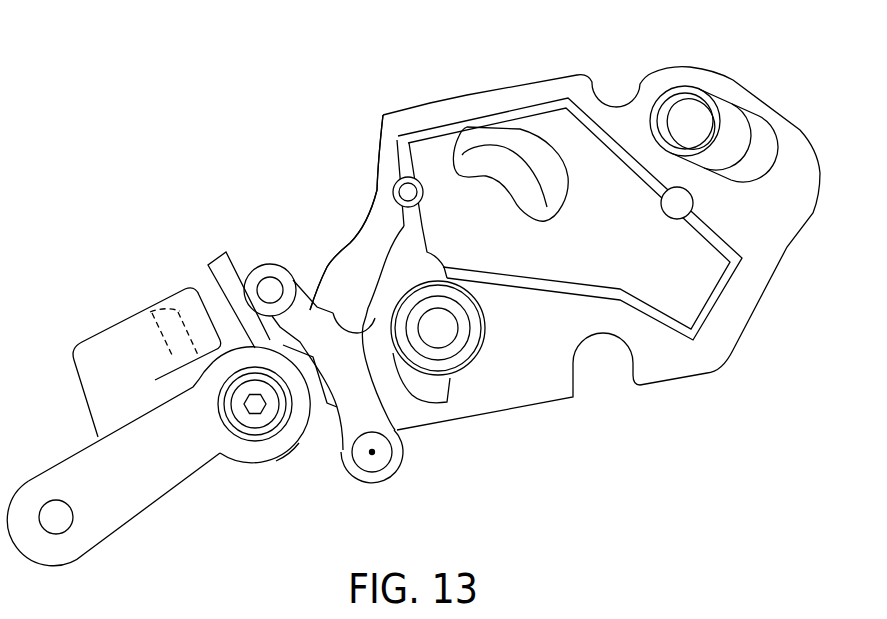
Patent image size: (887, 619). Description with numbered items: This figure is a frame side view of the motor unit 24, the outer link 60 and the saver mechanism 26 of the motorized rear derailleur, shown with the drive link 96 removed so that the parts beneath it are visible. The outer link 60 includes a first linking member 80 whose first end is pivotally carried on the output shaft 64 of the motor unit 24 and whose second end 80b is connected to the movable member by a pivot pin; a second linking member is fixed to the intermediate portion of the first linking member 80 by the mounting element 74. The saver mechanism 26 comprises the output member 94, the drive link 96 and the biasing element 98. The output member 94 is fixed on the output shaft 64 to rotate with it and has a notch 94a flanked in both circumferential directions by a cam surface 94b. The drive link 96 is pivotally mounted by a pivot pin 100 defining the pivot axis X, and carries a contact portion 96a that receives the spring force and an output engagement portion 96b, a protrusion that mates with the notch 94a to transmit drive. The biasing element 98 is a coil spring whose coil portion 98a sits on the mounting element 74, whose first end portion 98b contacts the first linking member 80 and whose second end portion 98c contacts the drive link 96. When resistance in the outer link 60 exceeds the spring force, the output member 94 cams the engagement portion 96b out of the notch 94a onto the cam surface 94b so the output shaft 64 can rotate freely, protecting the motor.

The motor unit 24 is at (430, 98).
The saver mechanism 26 is at (233, 233).
The outer link 60 is at (113, 475).
The output shaft 64 is at (456, 338).
The mounting element 74 is at (259, 420).
The first linking member 80 is at (174, 482).
The second end 80b is at (88, 556).
The output member 94 is at (449, 341).
The notch 94a is at (309, 298).
The cam surface 94b is at (414, 228).
The drive link 96 is at (356, 375).
The contact portion 96a is at (270, 287).
The output engagement portion 96b is at (362, 315).
The biasing element 98 is at (201, 377).
The coil portion 98a is at (288, 452).
The first end portion 98b is at (183, 288).
The second end portion 98c is at (217, 257).
The pivot pin 100 is at (392, 463).
The pivot axis X is at (373, 458).